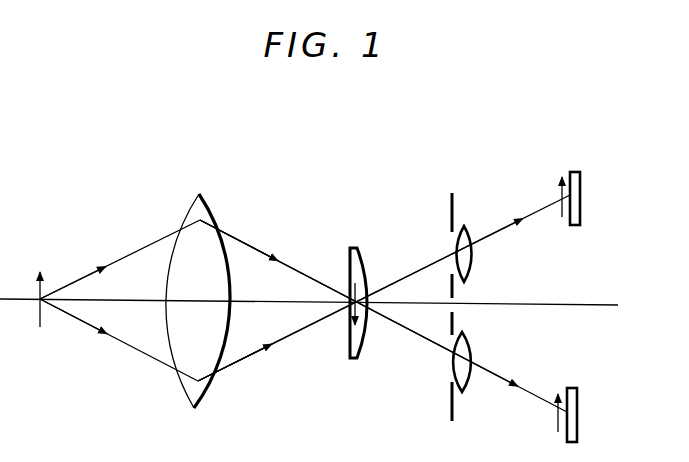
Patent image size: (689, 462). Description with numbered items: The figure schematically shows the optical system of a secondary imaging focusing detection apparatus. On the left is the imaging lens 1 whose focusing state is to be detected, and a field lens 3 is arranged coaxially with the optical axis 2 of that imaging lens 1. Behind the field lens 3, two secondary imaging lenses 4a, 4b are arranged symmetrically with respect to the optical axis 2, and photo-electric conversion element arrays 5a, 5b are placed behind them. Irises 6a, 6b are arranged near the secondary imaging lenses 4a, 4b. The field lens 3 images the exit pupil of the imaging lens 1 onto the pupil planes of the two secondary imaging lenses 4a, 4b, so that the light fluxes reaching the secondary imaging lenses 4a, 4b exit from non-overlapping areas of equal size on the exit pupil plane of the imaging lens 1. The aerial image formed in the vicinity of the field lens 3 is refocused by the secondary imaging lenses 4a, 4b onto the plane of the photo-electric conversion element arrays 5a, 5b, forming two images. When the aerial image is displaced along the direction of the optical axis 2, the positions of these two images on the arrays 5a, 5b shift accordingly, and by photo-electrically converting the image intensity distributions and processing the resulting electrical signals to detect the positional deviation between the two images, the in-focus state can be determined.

The imaging lens 1 is at (213, 212).
The optical axis 2 is at (303, 303).
The field lens 3 is at (353, 248).
The secondary imaging lens 4a is at (472, 226).
The secondary imaging lens 4b is at (468, 390).
The photo-electric conversion element array 5a is at (582, 187).
The photo-electric conversion element array 5b is at (577, 397).
The iris 6a is at (448, 203).
The iris 6b is at (453, 316).